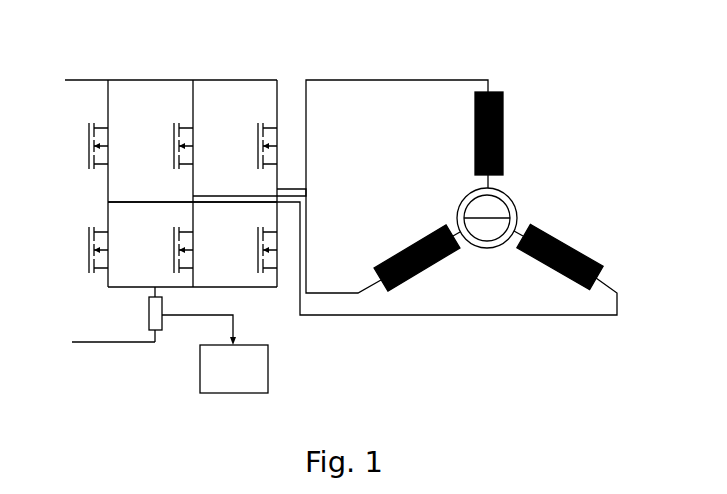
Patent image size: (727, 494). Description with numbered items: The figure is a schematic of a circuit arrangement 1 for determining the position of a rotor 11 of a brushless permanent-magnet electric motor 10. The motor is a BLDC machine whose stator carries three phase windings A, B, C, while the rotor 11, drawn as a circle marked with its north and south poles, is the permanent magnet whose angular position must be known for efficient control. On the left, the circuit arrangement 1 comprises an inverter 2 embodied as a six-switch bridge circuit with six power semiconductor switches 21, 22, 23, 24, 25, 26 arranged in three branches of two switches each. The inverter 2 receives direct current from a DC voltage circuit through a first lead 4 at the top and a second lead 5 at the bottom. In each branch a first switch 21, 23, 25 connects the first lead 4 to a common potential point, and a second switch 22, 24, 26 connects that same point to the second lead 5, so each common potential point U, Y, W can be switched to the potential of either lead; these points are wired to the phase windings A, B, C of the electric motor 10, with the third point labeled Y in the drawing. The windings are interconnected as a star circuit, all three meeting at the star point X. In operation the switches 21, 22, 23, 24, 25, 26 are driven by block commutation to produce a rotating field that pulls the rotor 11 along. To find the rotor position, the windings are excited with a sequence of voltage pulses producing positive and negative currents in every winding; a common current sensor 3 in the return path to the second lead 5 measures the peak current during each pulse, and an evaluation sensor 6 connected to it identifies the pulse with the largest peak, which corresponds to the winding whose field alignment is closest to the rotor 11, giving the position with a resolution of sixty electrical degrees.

The circuit arrangement 1 is at (158, 62).
The inverter 2 is at (220, 78).
The common current sensor 3 is at (149, 308).
The first lead 4 is at (88, 79).
The second lead 5 is at (92, 342).
The evaluation sensor 6 is at (200, 370).
The electric motor 10 is at (517, 83).
The rotor 11 is at (508, 202).
The first switch 21 is at (89, 141).
The second switch 22 is at (89, 243).
The first switch 23 is at (174, 141).
The second switch 24 is at (174, 243).
The first switch 25 is at (258, 141).
The second switch 26 is at (258, 243).
The phase winding A is at (503, 116).
The phase winding B is at (425, 240).
The phase winding C is at (555, 233).
The common potential point U is at (345, 80).
The V-phase terminal line Y is at (325, 293).
The common potential point W is at (410, 315).
The star point X is at (488, 249).